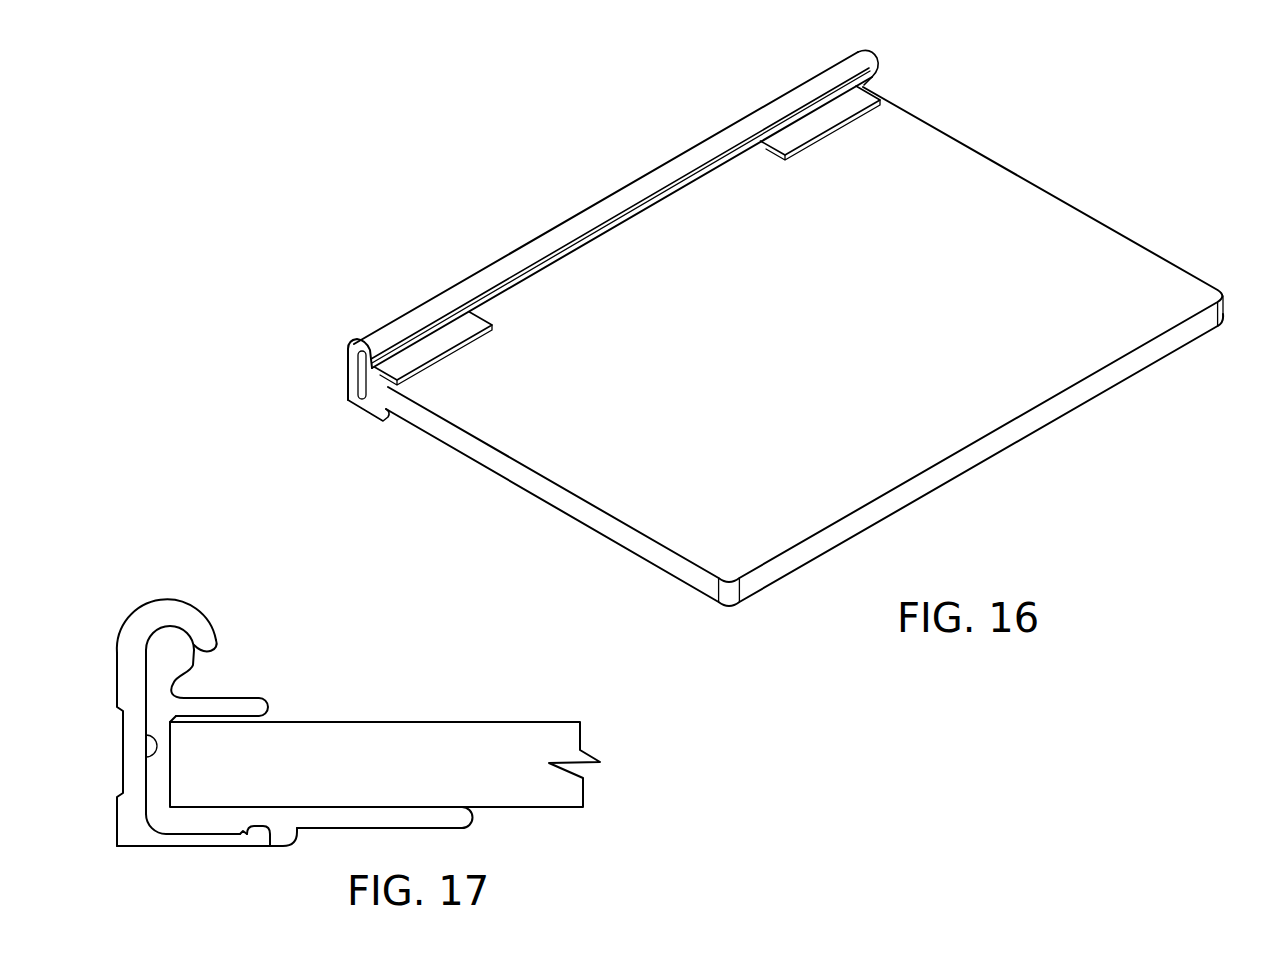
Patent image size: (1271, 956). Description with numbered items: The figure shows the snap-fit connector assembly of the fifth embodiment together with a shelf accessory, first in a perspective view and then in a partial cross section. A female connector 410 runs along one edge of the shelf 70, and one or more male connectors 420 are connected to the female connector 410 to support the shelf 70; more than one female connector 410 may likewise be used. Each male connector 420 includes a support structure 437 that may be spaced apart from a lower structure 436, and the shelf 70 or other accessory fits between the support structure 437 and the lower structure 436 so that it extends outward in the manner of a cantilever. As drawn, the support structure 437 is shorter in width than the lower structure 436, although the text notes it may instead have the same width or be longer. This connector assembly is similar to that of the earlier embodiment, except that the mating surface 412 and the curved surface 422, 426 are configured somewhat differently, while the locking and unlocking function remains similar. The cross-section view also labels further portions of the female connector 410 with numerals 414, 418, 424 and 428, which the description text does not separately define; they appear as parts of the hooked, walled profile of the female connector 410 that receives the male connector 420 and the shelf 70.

In FIG. 16, the shelf 70 is at (642, 550).
In FIG. 17, the shelf 70 is at (430, 722).
In FIG. 16, the female connector 410 is at (578, 221).
In FIG. 17, the female connector 410 is at (266, 722).
In FIG. 17, the mating surface 412 is at (258, 826).
In FIG. 17, the hook portion 414 is at (157, 610).
In FIG. 17, the side wall 418 is at (140, 712).
In FIG. 16, the male connector 420 is at (422, 344).
In FIG. 17, the male connector 420 is at (220, 700).
In FIG. 17, the curved surface 422 is at (242, 830).
In FIG. 17, the hook end 424 is at (172, 641).
In FIG. 17, the curved surface 426 is at (292, 847).
In FIG. 17, the bead 428 is at (150, 758).
In FIG. 17, the lower structure 436 is at (413, 807).
In FIG. 17, the support structure 437 is at (228, 720).